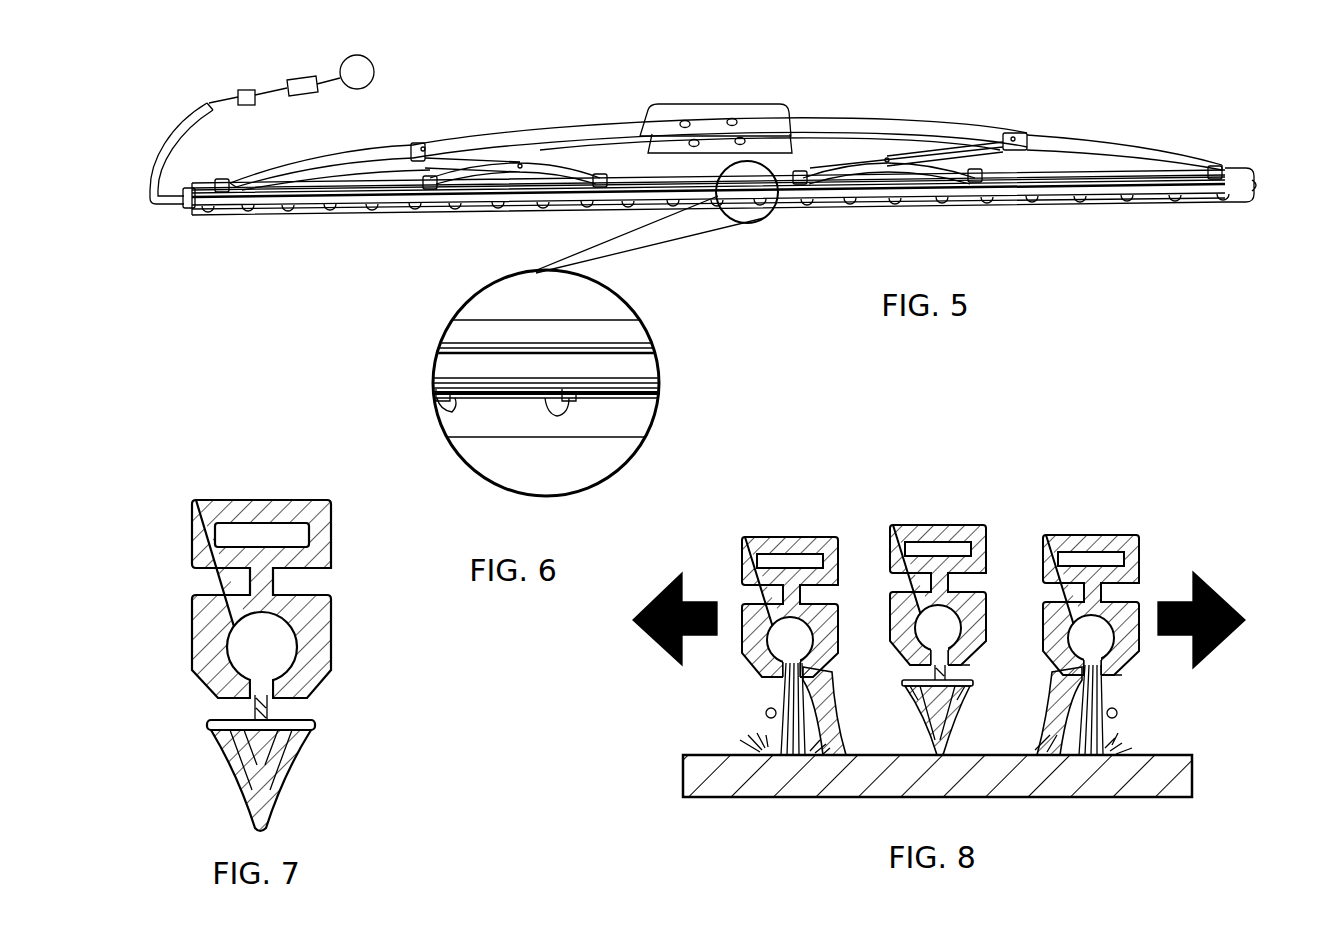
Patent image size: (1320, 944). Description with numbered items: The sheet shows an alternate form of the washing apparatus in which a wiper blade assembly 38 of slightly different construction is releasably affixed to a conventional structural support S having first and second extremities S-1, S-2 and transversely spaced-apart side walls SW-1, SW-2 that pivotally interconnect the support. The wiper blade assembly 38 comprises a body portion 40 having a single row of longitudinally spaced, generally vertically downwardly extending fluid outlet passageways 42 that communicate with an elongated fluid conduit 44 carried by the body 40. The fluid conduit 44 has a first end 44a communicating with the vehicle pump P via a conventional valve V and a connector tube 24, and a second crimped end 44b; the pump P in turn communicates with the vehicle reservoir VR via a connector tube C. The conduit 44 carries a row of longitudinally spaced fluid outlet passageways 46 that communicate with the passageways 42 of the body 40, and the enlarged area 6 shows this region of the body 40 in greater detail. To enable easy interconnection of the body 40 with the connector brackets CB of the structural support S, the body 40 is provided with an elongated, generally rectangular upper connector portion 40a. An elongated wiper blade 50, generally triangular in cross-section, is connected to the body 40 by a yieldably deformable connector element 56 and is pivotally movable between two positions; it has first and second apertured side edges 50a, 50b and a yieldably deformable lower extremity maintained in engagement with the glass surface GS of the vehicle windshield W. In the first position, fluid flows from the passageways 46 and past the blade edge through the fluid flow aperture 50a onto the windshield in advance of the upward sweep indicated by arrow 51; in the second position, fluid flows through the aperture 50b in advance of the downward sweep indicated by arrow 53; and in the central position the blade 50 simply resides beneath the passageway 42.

In FIG. 5, the enlarged area 6 is at (760, 222).
In FIG. 5, the connector tube 24 is at (166, 140).
In FIG. 5, the wiper blade assembly 38 is at (1168, 207).
In FIG. 7, the wiper blade assembly 38 is at (262, 641).
In FIG. 5, the body portion 40 is at (1097, 188).
In FIG. 6, the body portion 40 is at (498, 362).
In FIG. 7, the body portion 40 is at (262, 592).
In FIG. 8, the body portion 40 is at (755, 605).
In FIG. 7, the upper connector portion 40a is at (257, 500).
In FIG. 8, the upper connector portion 40a is at (790, 537).
In FIG. 5, the fluid outlet passageways 42 is at (541, 207).
In FIG. 6, the fluid outlet passageways 42 is at (438, 408).
In FIG. 7, the fluid outlet passageways 42 is at (275, 692).
In FIG. 8, the fluid outlet passageways 42 is at (783, 674).
In FIG. 7, the fluid conduit 44 is at (262, 638).
In FIG. 8, the fluid conduit 44 is at (796, 634).
In FIG. 5, the first end 44a is at (181, 204).
In FIG. 5, the second crimped end 44b is at (1256, 190).
In FIG. 5, the fluid outlet passageways 46 is at (292, 206).
In FIG. 6, the fluid outlet passageways 46 is at (575, 392).
In FIG. 7, the fluid outlet passageways 46 is at (237, 683).
In FIG. 8, the fluid outlet passageways 46 is at (748, 668).
In FIG. 5, the wiper blade 50 is at (1022, 199).
In FIG. 6, the wiper blade 50 is at (513, 430).
In FIG. 7, the wiper blade 50 is at (249, 766).
In FIG. 8, the wiper blade 50 is at (838, 738).
In FIG. 5, the first apertured side edge 50a is at (373, 208).
In FIG. 6, the first apertured side edge 50a is at (446, 412).
In FIG. 7, the first apertured side edge 50a is at (236, 735).
In FIG. 8, the first apertured side edge 50a is at (766, 713).
In FIG. 7, the second apertured side edge 50b is at (287, 738).
In FIG. 8, the second apertured side edge 50b is at (820, 692).
In FIG. 8, the arrow 51 is at (648, 610).
In FIG. 8, the arrow 53 is at (1225, 598).
In FIG. 7, the connector element 56 is at (253, 707).
In FIG. 8, the connector element 56 is at (925, 672).
In FIG. 5, the connector brackets CB is at (222, 179).
In FIG. 5, the structural support S is at (815, 120).
In FIG. 5, the first extremity S-1 is at (312, 152).
In FIG. 5, the second extremity S-2 is at (1107, 138).
In FIG. 5, the side wall SW-1 is at (668, 118).
In FIG. 5, the side wall SW-2 is at (712, 143).
In FIG. 5, the valve V is at (245, 90).
In FIG. 5, the pump P is at (304, 90).
In FIG. 5, the connector tube C is at (325, 78).
In FIG. 5, the vehicle reservoir VR is at (362, 78).
In FIG. 8, the glass surface GS is at (1005, 755).
In FIG. 8, the windshield W is at (1123, 782).